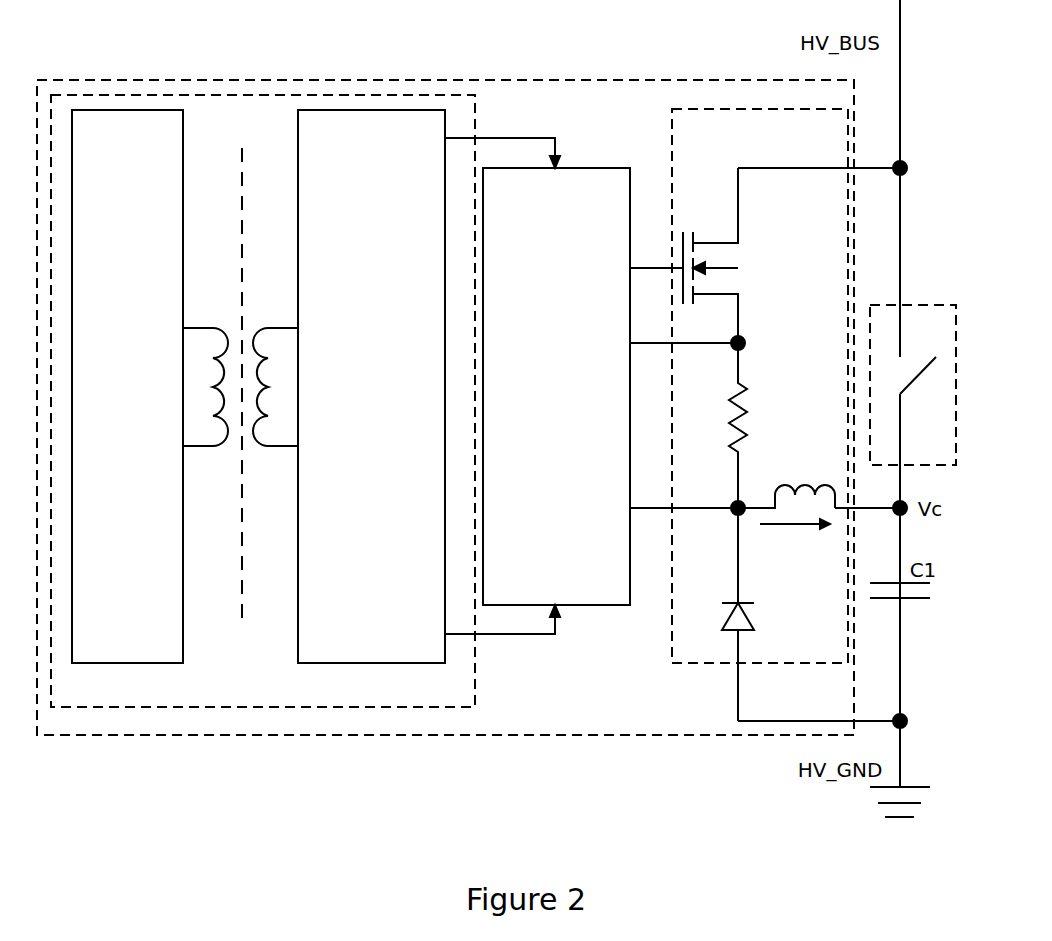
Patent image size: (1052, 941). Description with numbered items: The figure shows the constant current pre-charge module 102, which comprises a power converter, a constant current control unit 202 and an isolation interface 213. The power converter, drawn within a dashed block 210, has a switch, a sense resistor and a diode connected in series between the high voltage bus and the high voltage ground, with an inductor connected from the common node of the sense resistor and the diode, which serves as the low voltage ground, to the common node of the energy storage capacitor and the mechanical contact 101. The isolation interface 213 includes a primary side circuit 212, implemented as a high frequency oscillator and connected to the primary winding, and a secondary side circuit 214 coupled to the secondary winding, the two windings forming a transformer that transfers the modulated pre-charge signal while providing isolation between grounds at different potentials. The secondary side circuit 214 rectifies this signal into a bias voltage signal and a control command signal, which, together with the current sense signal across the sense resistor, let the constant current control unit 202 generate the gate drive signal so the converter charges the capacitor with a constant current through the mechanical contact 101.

The mechanical contact 101 is at (908, 451).
The constant current pre-charge module 102 is at (598, 719).
The constant current control unit 202 is at (537, 459).
The switching / current regulation stage 210 is at (788, 149).
The primary side circuit 212 is at (108, 459).
The isolation interface 213 is at (262, 689).
The secondary side circuit 214 is at (352, 446).